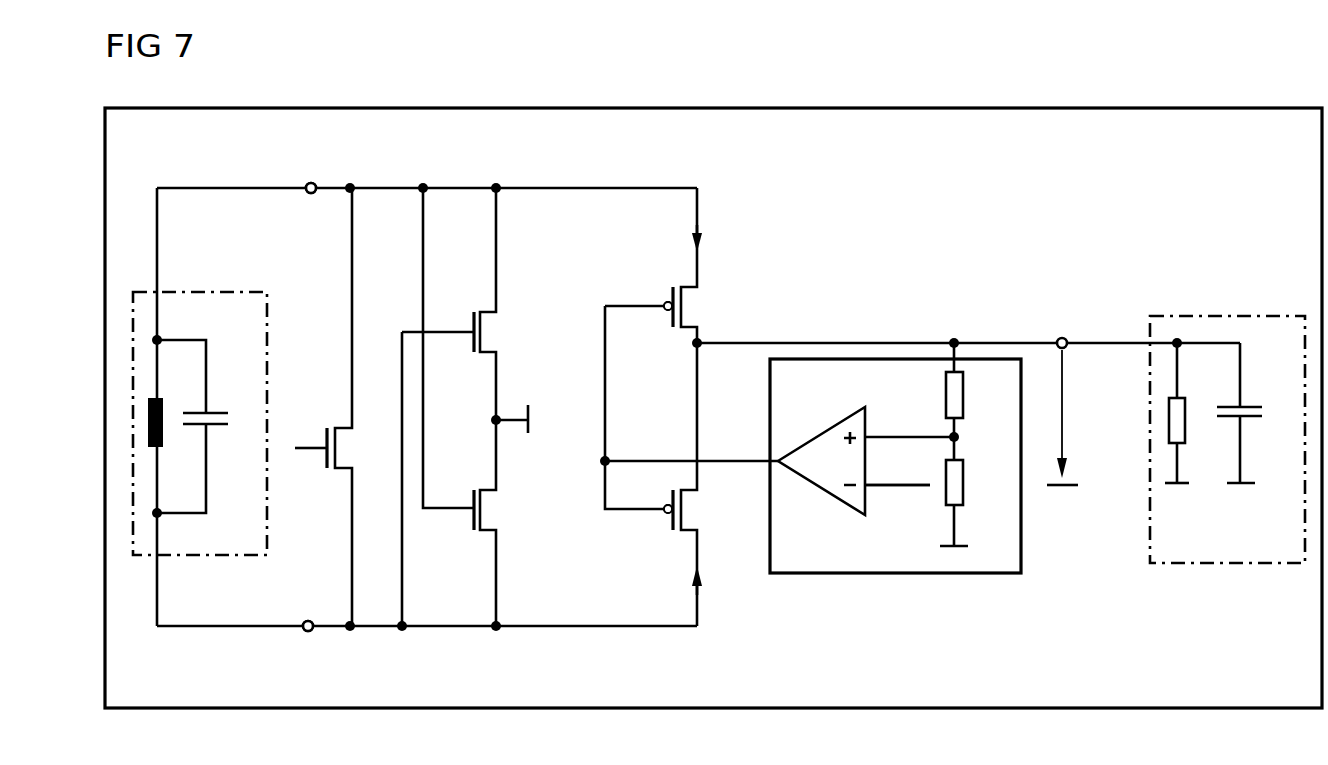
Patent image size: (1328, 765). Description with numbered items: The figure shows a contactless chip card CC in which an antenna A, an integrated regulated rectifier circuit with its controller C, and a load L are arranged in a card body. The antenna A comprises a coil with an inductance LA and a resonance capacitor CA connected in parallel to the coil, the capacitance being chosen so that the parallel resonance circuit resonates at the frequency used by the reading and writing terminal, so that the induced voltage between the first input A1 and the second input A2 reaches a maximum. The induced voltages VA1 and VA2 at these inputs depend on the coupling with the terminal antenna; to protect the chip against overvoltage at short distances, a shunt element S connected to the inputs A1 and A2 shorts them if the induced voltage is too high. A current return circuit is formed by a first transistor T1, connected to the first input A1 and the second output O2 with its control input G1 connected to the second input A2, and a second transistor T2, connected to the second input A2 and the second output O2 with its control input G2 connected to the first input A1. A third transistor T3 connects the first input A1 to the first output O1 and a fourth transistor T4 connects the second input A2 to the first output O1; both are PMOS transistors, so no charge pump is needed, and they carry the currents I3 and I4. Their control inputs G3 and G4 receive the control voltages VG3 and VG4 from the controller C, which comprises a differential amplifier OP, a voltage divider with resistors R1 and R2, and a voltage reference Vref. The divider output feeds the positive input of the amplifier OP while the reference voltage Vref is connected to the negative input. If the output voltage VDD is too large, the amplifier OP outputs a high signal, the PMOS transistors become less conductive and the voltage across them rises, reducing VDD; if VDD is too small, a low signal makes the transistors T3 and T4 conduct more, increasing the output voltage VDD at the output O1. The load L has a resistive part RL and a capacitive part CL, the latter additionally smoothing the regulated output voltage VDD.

The contactless chip card CC is at (716, 108).
The first input A1 is at (311, 182).
The second input A2 is at (309, 632).
The voltage at first input VA1 is at (312, 209).
The voltage at second input VA2 is at (309, 606).
The antenna A is at (233, 292).
The inductance LA is at (163, 445).
The resonance capacitor CA is at (214, 411).
The shunt element S is at (337, 442).
The first transistor T1 is at (482, 324).
The second transistor T2 is at (482, 500).
The control input of first transistor G1 is at (435, 462).
The control input of second transistor G2 is at (446, 346).
The third transistor T3 is at (683, 296).
The fourth transistor T4 is at (683, 499).
The control input of third transistor G3 is at (634, 364).
The control input of fourth transistor G4 is at (632, 483).
The control voltage VG3 is at (643, 327).
The control voltage VG4 is at (643, 529).
The current through third transistor I3 is at (710, 241).
The current through fourth transistor I4 is at (710, 581).
The first output O1 is at (1066, 326).
The second output O2 is at (531, 420).
The controller C is at (893, 574).
The differential amplifier OP is at (835, 497).
The resistor R1 is at (945, 395).
The resistor R2 is at (957, 507).
The reference voltage Vref is at (897, 506).
The output voltage VDD is at (1083, 417).
The load L is at (1211, 316).
The resistive part RL is at (1184, 445).
The capacitive part CL is at (1258, 418).